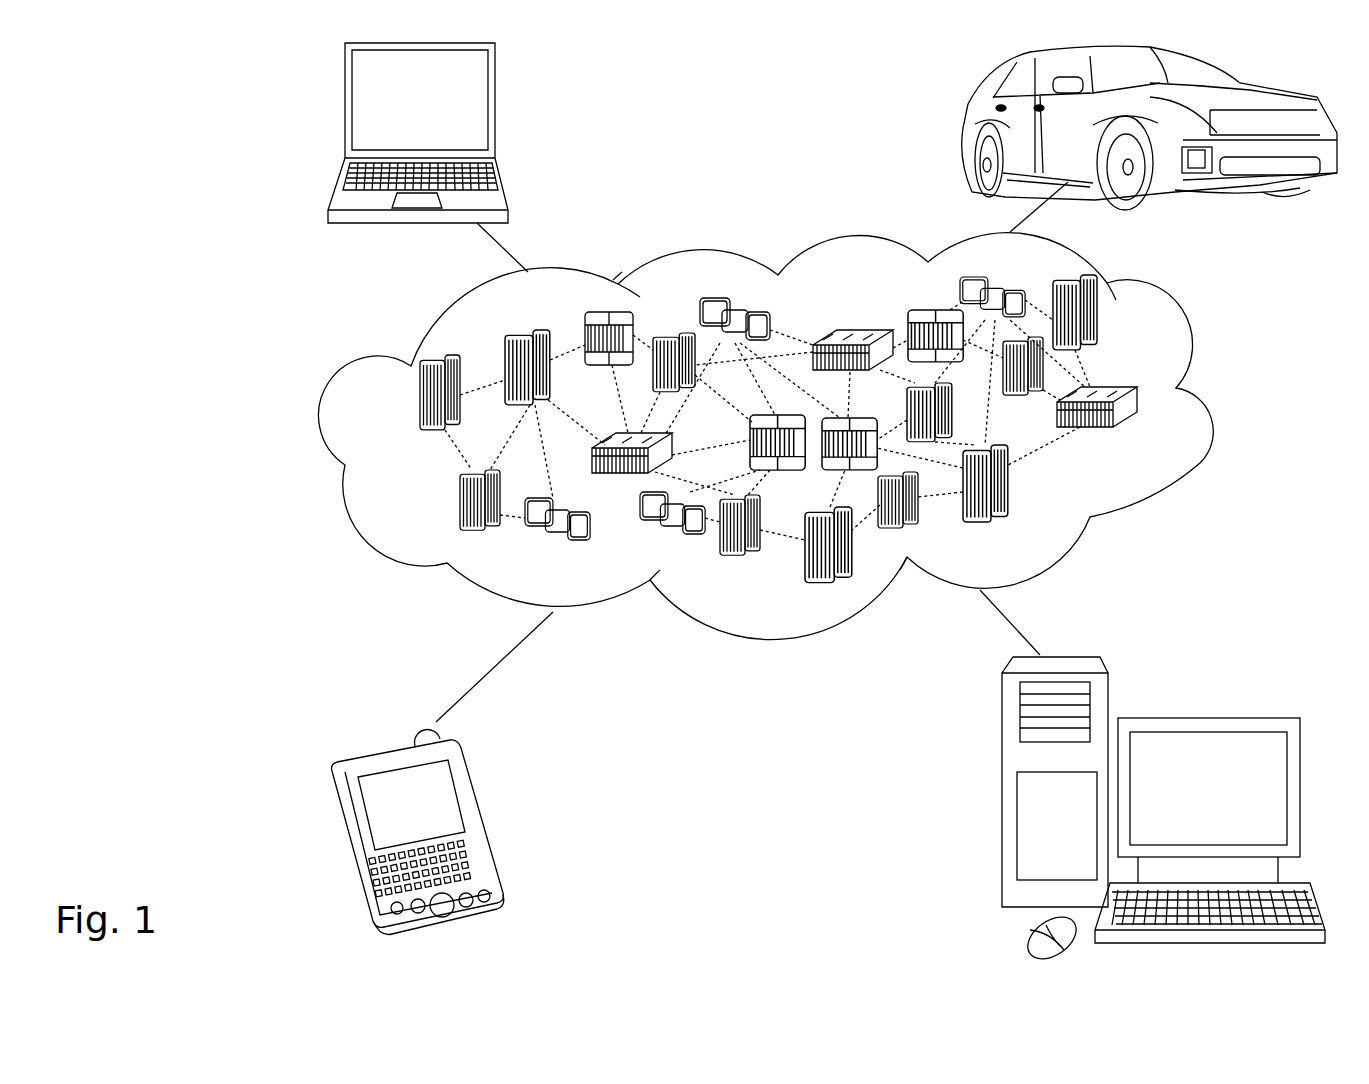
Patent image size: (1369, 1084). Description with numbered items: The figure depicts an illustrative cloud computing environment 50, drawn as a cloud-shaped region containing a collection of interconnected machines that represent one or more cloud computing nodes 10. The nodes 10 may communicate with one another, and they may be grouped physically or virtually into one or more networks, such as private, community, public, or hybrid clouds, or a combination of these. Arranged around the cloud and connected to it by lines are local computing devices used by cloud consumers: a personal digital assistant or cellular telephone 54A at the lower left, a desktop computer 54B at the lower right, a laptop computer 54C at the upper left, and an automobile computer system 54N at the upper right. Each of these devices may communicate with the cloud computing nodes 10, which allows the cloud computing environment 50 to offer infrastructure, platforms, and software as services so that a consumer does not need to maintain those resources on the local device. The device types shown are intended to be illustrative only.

The cloud computing nodes 10 is at (1140, 438).
The cloud computing environment 50 is at (1207, 407).
The personal digital assistant or cellular telephone 54A is at (480, 822).
The desktop computer 54B is at (1203, 717).
The laptop computer 54C is at (497, 112).
The automobile computer system 54N is at (972, 130).